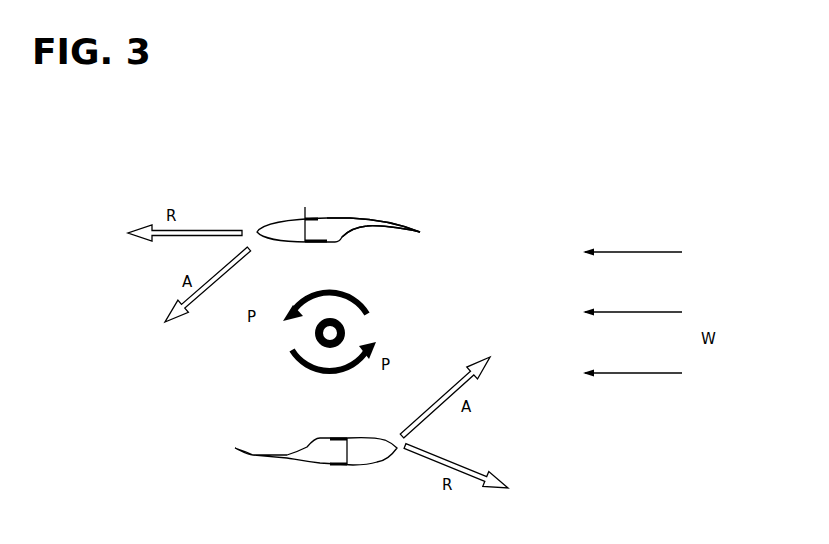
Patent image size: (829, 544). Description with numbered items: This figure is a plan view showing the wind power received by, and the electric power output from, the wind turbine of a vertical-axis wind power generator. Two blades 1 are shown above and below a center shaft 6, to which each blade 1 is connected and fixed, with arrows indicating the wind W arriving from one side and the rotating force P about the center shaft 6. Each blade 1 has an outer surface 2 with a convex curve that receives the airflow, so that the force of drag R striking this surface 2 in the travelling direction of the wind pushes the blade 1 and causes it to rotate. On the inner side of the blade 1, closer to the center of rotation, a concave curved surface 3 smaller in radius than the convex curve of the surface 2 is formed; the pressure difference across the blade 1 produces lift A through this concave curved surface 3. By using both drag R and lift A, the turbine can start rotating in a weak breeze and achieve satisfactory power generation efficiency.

The blade 1 is at (292, 233).
The surface 2 is at (345, 218).
The concave curved surface 3 is at (343, 238).
The center shaft 6 is at (343, 331).